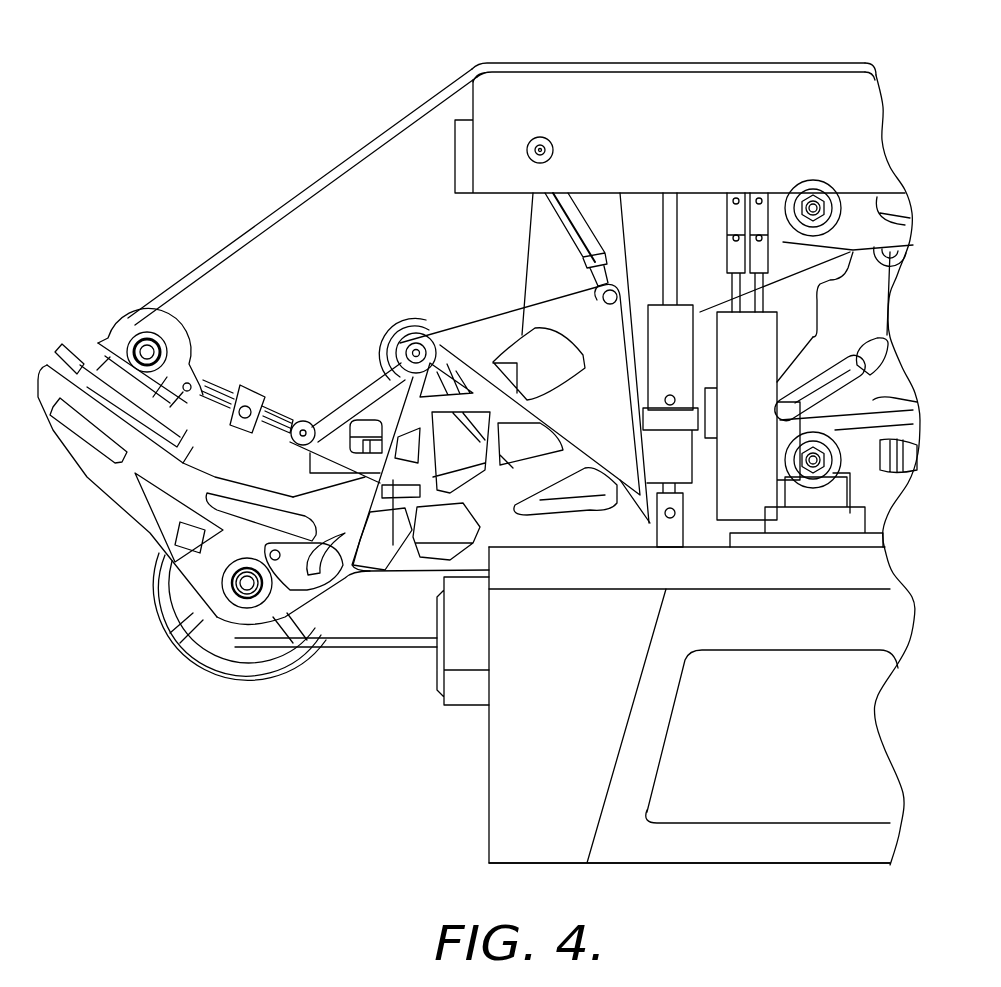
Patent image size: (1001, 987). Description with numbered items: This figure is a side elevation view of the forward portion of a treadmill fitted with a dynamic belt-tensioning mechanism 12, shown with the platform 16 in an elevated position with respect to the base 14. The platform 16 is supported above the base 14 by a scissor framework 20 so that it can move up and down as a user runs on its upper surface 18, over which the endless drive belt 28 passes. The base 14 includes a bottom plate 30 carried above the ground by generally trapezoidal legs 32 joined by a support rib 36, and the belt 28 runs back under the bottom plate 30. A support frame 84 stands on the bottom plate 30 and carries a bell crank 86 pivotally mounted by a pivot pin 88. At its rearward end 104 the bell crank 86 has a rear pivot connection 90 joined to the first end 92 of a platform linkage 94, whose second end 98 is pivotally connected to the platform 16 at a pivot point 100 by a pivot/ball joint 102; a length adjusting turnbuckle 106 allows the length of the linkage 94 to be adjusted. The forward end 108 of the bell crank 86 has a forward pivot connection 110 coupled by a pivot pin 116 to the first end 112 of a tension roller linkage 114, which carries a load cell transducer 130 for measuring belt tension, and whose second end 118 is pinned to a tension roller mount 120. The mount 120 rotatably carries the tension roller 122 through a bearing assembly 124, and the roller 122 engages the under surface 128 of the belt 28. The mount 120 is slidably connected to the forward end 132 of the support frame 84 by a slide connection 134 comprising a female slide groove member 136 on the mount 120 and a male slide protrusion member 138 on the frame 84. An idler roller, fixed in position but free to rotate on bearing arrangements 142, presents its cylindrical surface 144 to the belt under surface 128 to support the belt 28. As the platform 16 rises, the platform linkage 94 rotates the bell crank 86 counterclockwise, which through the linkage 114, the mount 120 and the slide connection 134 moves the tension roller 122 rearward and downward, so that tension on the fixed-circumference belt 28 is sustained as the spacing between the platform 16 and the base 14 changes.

The dynamic belt-tensioning mechanism 12 is at (151, 662).
The base 14 is at (448, 730).
The platform 16 is at (717, 60).
The upper surface 18 is at (550, 72).
The scissor framework 20 is at (890, 490).
The endless/drive belt 28 is at (365, 152).
The bottom plate 30 is at (886, 570).
The legs 32 is at (770, 860).
The support rib 36 is at (572, 768).
The support frames 84 is at (130, 500).
The bell crank 86 is at (473, 308).
The pivot pin 88 is at (410, 348).
The rear pivot connection 90 is at (603, 300).
The first end 92 is at (604, 292).
The platform linkage 94 is at (565, 212).
The second end 98 is at (526, 199).
The pivot point 100 is at (545, 138).
The pivot/ball joint 102 is at (553, 150).
The rearward end 104 is at (597, 348).
The length adjusting turnbuckle 106 is at (583, 215).
The forward end 108 is at (340, 400).
The forward pivot connection 110 is at (330, 400).
The first end 112 is at (295, 443).
The tension roller linkage 114 is at (246, 393).
The pivot pin 116 is at (100, 437).
The second end 118 is at (208, 362).
The tension roller mount 120 is at (190, 362).
The tension roller 122 is at (170, 300).
The bearing assembly 124 is at (143, 350).
The under surface 128 is at (330, 178).
The load cell transducer 130 is at (240, 430).
The forward end 132 is at (43, 385).
The slide connection 134 is at (82, 352).
The female slide groove member 136 is at (52, 356).
The male slide protrusion member 138 is at (187, 391).
The bearing arrangements 142 is at (248, 592).
The cylindrical surface 144 is at (268, 632).